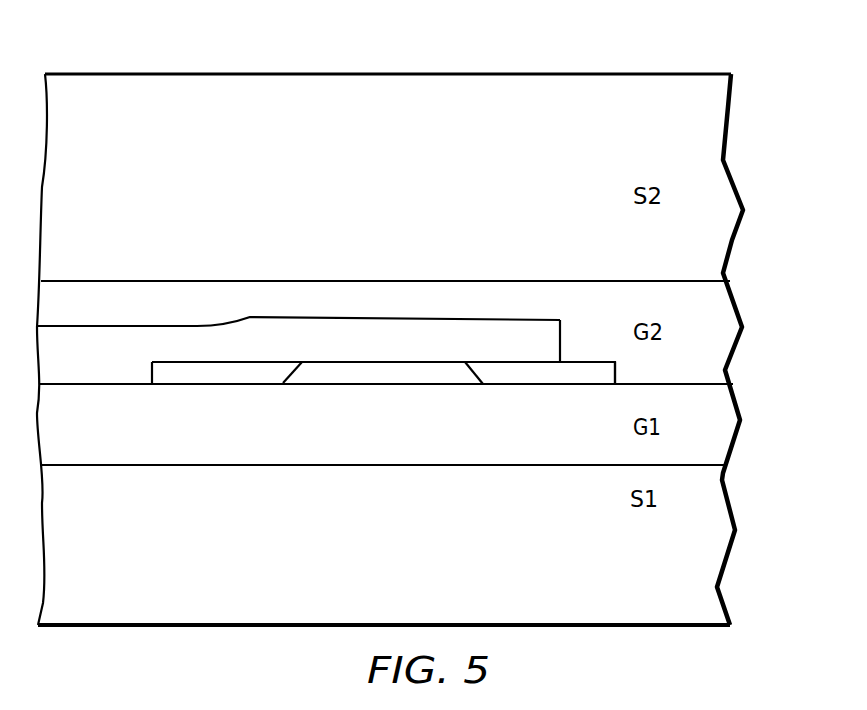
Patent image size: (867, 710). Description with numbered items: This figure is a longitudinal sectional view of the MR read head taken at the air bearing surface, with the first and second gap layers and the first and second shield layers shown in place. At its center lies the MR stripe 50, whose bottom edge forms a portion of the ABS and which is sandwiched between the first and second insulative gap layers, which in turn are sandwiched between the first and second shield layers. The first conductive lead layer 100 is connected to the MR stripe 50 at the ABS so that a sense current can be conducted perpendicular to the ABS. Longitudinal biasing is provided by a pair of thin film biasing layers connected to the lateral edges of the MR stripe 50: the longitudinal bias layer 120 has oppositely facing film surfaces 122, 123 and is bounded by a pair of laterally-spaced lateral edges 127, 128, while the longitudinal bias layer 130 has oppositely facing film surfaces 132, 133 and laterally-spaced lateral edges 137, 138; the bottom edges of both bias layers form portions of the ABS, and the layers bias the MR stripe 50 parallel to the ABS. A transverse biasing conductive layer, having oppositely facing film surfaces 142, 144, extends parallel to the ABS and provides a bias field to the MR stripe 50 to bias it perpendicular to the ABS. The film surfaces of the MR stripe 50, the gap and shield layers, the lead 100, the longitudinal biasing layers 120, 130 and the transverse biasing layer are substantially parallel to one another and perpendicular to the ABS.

The MR stripe 50 is at (362, 378).
The first conductive lead layer 100 is at (449, 335).
The longitudinal bias layer 120 is at (543, 377).
The film surface 122 is at (519, 363).
The film surface 123 is at (518, 384).
The lateral edge 127 is at (615, 373).
The lateral edge 128 is at (478, 384).
The longitudinal bias layer 130 is at (227, 372).
The film surface 132 is at (265, 361).
The film surface 133 is at (240, 384).
The lateral edge 137 is at (287, 384).
The lateral edge 138 is at (152, 368).
The film surface 142 is at (102, 352).
The film surface 144 is at (108, 384).